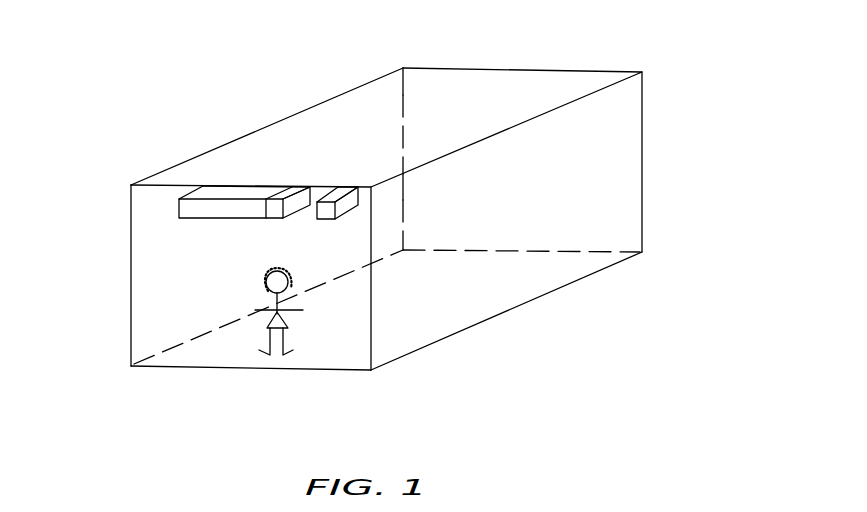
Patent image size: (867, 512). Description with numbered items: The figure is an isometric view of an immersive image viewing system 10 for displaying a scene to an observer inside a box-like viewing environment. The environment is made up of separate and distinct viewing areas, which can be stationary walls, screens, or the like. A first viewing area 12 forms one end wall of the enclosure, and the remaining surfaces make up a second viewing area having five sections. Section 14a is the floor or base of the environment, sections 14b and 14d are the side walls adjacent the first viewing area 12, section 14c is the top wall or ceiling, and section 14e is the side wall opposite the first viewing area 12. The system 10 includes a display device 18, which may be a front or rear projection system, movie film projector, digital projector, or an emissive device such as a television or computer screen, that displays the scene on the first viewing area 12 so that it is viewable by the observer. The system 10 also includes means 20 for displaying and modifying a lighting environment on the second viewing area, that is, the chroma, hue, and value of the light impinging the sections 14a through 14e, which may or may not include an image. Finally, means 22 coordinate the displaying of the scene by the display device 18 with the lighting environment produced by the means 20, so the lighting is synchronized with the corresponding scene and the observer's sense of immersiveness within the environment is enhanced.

The immersive image viewing system 10 is at (247, 98).
The first viewing area 12 is at (622, 132).
The second viewing area section (floor or base) 14a is at (332, 350).
The second viewing area section (side wall) 14b is at (622, 223).
The second viewing area section (top wall) 14c is at (513, 85).
The second viewing area section (side wall) 14d is at (152, 267).
The second viewing area section (opposite side wall) 14e is at (192, 367).
The display device 18 is at (222, 208).
The means for displaying and modifying a lighting environment 20 is at (333, 187).
The means for coordinating 22 is at (270, 207).